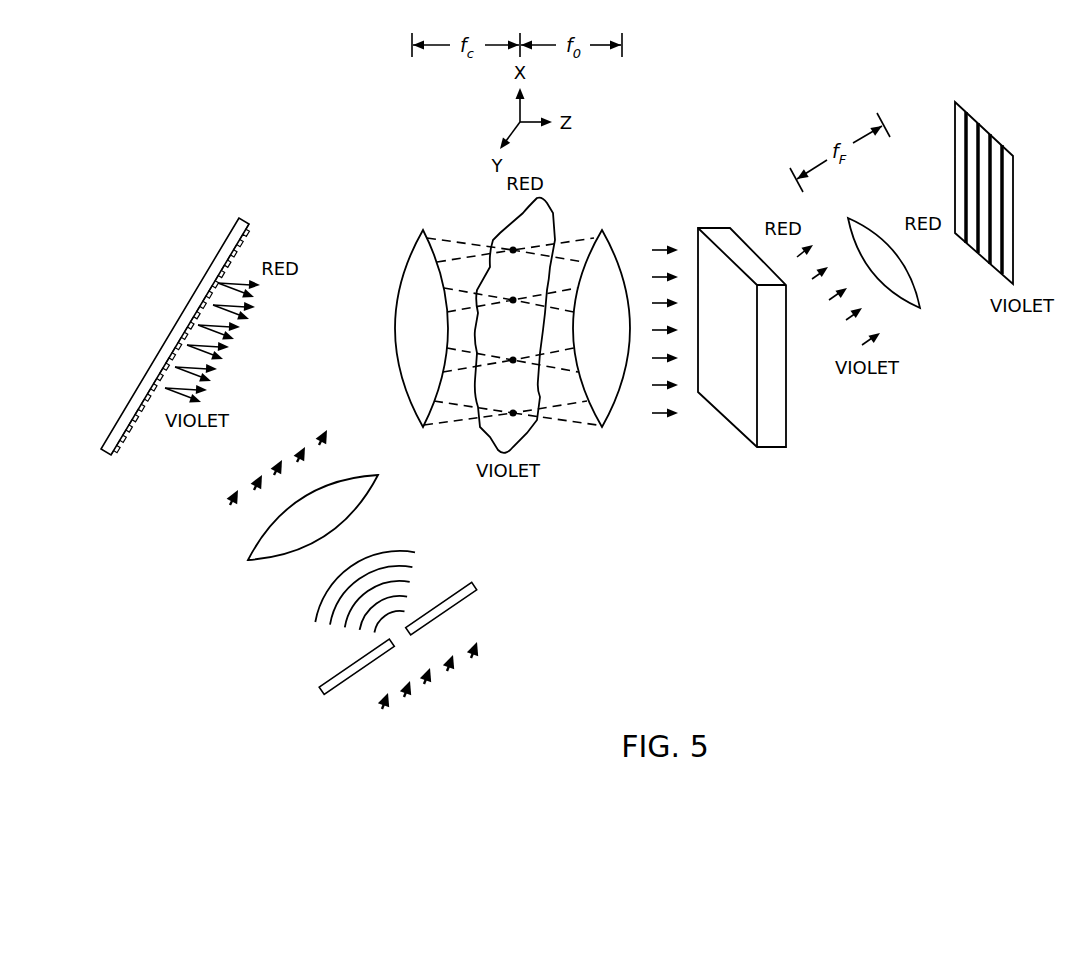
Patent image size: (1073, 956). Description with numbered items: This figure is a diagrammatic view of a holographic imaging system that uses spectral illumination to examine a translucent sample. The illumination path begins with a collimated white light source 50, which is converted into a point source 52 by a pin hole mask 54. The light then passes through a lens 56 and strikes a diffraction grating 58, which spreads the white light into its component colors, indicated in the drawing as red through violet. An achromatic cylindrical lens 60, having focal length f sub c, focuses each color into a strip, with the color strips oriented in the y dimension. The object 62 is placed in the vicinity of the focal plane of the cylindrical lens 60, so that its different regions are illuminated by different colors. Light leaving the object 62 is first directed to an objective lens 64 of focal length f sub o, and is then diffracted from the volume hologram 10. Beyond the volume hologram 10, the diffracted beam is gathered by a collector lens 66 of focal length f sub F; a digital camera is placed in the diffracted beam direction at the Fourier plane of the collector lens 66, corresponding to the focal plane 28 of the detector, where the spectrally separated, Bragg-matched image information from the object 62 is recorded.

The volume hologram 10 is at (786, 383).
The focal plane of a detector 28 is at (1013, 213).
The collimated white light source 50 is at (378, 712).
The point source 52 is at (338, 623).
The pin hole mask 54 is at (458, 585).
The lens 56 is at (378, 475).
The diffraction grating 58 is at (233, 260).
The achromatic cylindrical lens 60 is at (413, 242).
The object 62 is at (553, 213).
The objective lens 64 is at (607, 235).
The collector lens 66 is at (920, 308).